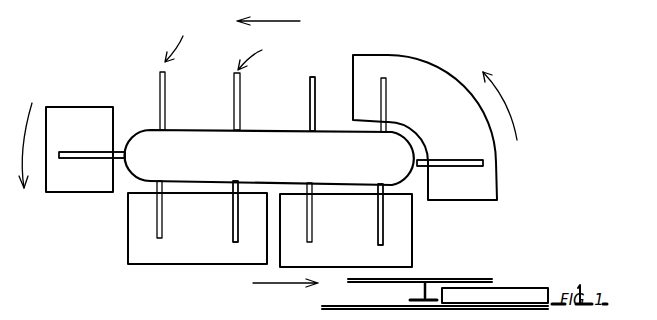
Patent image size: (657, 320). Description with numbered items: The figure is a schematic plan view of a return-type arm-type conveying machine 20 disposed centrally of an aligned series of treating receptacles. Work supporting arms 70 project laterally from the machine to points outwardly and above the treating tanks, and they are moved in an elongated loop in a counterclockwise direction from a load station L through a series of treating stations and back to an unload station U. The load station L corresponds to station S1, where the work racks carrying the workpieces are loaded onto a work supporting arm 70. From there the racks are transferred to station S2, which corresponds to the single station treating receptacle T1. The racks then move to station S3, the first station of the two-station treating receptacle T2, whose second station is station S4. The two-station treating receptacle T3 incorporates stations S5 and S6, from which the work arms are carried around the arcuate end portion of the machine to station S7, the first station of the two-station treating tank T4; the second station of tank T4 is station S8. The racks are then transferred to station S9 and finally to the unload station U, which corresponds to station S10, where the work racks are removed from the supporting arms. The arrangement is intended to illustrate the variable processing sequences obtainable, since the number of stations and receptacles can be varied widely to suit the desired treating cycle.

The arm-type conveying machine 20 is at (131, 180).
The work supporting arm 70 is at (66, 160).
The station 1 S1 is at (165, 116).
The station S2 is at (82, 150).
The station S3 is at (163, 223).
The station S4 is at (233, 237).
The station S5 is at (313, 213).
The station S6 is at (376, 235).
The station S7 is at (443, 168).
The station S8 is at (387, 93).
The station S9 is at (310, 108).
The station S10 is at (241, 110).
The single station treating receptacle T1 is at (40, 193).
The two-station treating receptacle T2 is at (132, 252).
The two-station treating receptacle T3 is at (410, 252).
The two-station treating receptacle T4 is at (422, 67).
The unload station U is at (268, 43).
The load station L is at (174, 37).